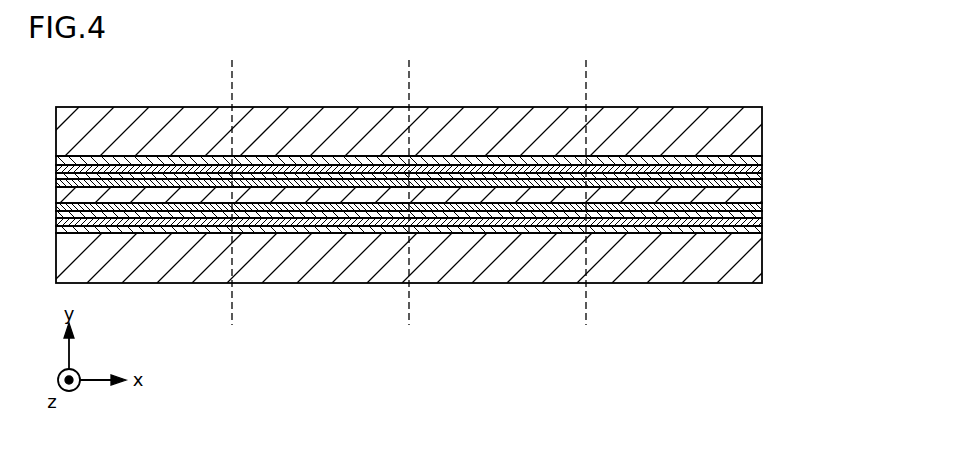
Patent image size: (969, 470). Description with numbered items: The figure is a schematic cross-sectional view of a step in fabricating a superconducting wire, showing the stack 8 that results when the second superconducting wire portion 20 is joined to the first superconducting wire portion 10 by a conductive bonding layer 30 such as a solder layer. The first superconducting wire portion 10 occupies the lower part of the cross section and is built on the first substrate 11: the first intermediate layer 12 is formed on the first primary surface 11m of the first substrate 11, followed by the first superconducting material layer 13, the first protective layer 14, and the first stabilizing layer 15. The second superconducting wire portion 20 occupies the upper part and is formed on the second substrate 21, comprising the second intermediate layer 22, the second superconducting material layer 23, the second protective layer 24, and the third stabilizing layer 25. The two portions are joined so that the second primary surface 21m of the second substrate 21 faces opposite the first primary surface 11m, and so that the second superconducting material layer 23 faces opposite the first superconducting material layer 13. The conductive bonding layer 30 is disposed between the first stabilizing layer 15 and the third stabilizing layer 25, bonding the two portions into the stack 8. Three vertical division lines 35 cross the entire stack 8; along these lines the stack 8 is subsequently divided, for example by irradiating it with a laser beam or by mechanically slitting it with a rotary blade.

The stack 8 is at (869, 87).
The first superconducting wire portion 10 is at (825, 218).
The first substrate 11 is at (650, 263).
The first intermediate layer 12 is at (662, 228).
The first superconducting material layer 13 is at (675, 223).
The first protective layer 14 is at (680, 215).
The first stabilizing layer 15 is at (692, 204).
The second superconducting wire portion 20 is at (825, 28).
The second substrate 21 is at (650, 125).
The second intermediate layer 22 is at (662, 163).
The second superconducting material layer 23 is at (682, 172).
The second protective layer 24 is at (687, 180).
The third stabilizing layer 25 is at (708, 187).
The conductive bonding layer 30 is at (712, 197).
The division line 35 is at (408, 179).
The second primary surface 21m is at (497, 156).
The first primary surface 11m is at (497, 237).